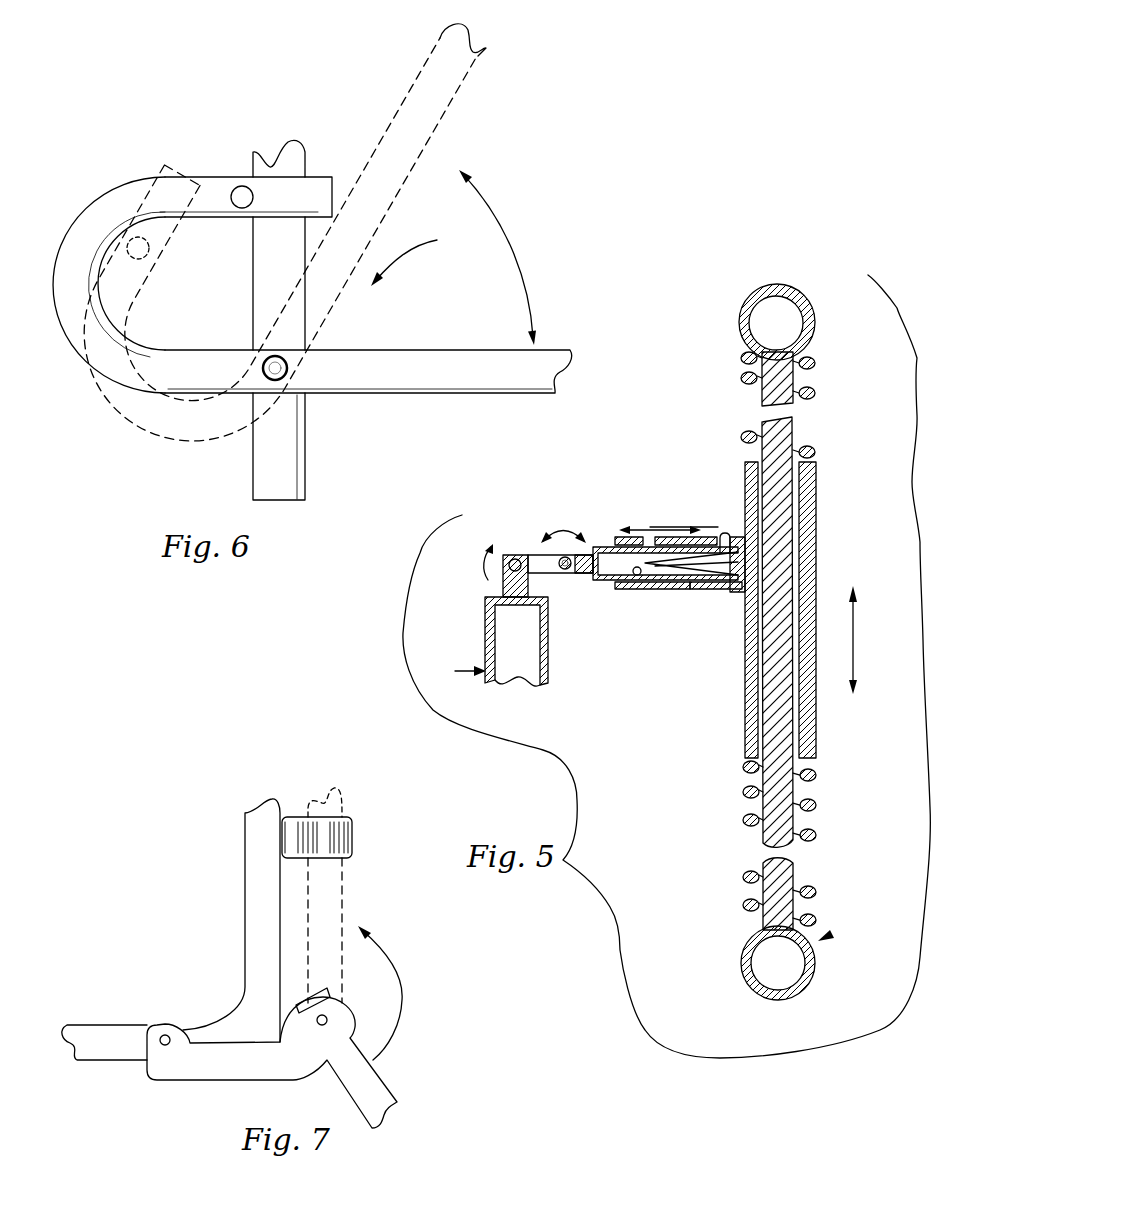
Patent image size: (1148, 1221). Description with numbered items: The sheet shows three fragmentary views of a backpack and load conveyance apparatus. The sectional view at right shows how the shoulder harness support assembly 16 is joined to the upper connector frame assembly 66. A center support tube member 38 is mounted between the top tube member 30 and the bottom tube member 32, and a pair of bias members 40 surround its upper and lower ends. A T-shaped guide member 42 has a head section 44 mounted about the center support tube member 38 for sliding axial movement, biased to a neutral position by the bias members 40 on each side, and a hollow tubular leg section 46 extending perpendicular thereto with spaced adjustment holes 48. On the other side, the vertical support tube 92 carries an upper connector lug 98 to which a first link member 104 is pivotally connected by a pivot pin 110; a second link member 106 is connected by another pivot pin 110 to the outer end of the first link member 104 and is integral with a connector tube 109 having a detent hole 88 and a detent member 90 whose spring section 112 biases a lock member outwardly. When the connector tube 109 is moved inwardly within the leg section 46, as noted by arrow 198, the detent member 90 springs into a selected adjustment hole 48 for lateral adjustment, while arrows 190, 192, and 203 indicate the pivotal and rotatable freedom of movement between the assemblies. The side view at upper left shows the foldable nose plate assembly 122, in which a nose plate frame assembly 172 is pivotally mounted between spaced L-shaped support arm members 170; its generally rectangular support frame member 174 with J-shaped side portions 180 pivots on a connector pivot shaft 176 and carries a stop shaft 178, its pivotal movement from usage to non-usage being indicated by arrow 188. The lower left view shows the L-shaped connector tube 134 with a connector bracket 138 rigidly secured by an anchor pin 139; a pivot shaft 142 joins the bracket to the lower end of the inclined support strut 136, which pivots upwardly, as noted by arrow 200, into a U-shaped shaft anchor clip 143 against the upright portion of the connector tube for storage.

In FIG. 5, the shoulder harness support assembly 16 is at (824, 933).
In FIG. 5, the top tube member 30 is at (800, 296).
In FIG. 5, the bottom tube member 32 is at (815, 992).
In FIG. 5, the center support tube member 38 is at (793, 422).
In FIG. 5, the bias members 40 is at (815, 362).
In FIG. 5, the guide member 42 is at (816, 486).
In FIG. 5, the head section 44 is at (807, 538).
In FIG. 5, the leg section 46 is at (712, 592).
In FIG. 5, the adjustment holes 48 is at (687, 540).
In FIG. 5, the upper connector frame assembly 66 is at (454, 664).
In FIG. 5, the detent hole 88 is at (723, 536).
In FIG. 5, the detent member 90 is at (665, 592).
In FIG. 5, the vertical support tube 92 is at (485, 628).
In FIG. 5, the upper connector lug 98 is at (503, 582).
In FIG. 5, the first link member 104 is at (543, 558).
In FIG. 5, the second link member 106 is at (573, 574).
In FIG. 5, the connector tube 109 is at (638, 576).
In FIG. 5, the pivot pin 110 is at (513, 558).
In FIG. 5, the spring section 112 is at (736, 595).
In FIG. 6, the foldable nose plate assembly 122 is at (425, 254).
In FIG. 7, the L-shaped connector tube 134 is at (282, 866).
In FIG. 7, the support strut 136 is at (343, 803).
In FIG. 7, the connector bracket 138 is at (310, 1048).
In FIG. 7, the anchor pin 139 is at (167, 1034).
In FIG. 7, the pivot shaft 142 is at (325, 1015).
In FIG. 7, the shaft anchor clip 143 is at (293, 828).
In FIG. 6, the support arm members 170 is at (253, 469).
In FIG. 6, the nose plate frame assembly 172 is at (503, 393).
In FIG. 6, the support frame member 174 is at (333, 358).
In FIG. 6, the connector pivot shaft 176 is at (270, 378).
In FIG. 6, the stop shaft 178 is at (242, 186).
In FIG. 6, the side portions 180 is at (157, 347).
In FIG. 6, the arrow 188 is at (522, 263).
In FIG. 5, the arrow 190 is at (482, 549).
In FIG. 5, the arrow 192 is at (560, 527).
In FIG. 5, the arrow 198 is at (653, 546).
In FIG. 7, the arrow 200 is at (403, 982).
In FIG. 5, the arrow 203 is at (853, 692).